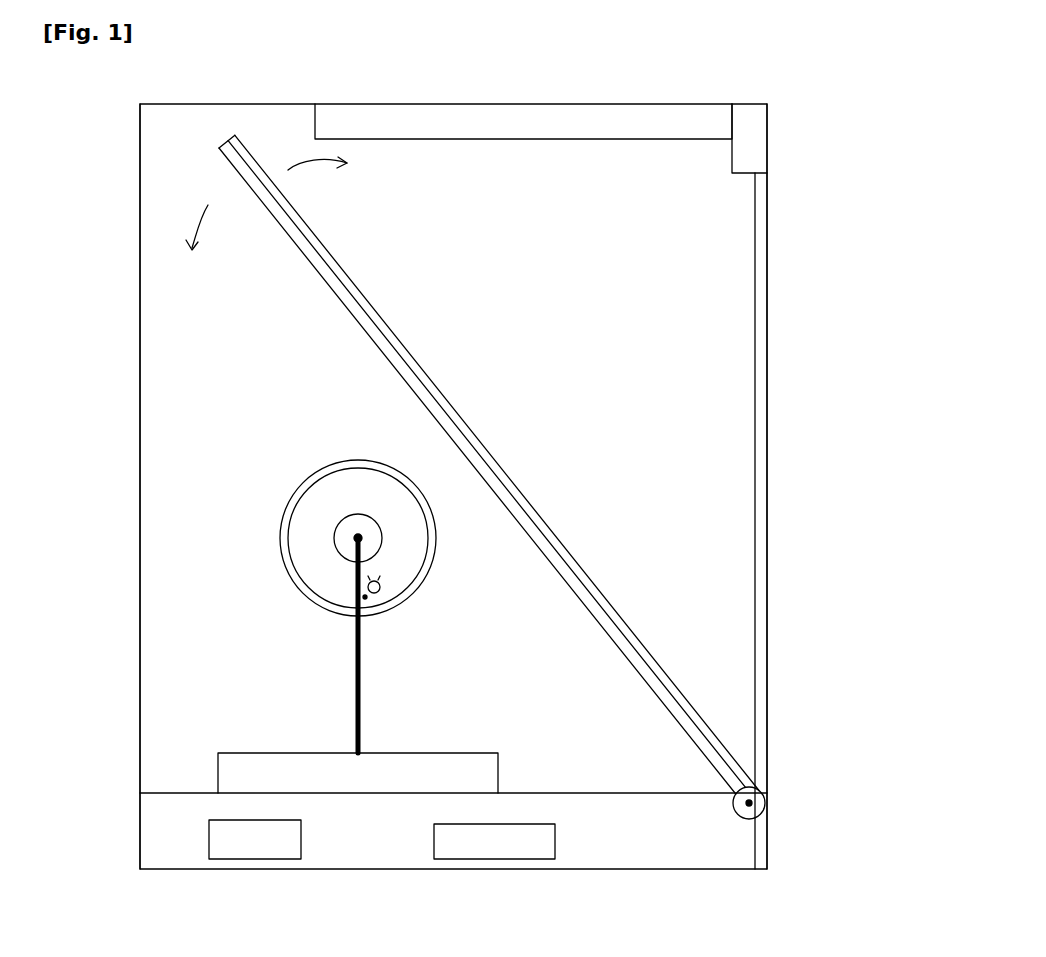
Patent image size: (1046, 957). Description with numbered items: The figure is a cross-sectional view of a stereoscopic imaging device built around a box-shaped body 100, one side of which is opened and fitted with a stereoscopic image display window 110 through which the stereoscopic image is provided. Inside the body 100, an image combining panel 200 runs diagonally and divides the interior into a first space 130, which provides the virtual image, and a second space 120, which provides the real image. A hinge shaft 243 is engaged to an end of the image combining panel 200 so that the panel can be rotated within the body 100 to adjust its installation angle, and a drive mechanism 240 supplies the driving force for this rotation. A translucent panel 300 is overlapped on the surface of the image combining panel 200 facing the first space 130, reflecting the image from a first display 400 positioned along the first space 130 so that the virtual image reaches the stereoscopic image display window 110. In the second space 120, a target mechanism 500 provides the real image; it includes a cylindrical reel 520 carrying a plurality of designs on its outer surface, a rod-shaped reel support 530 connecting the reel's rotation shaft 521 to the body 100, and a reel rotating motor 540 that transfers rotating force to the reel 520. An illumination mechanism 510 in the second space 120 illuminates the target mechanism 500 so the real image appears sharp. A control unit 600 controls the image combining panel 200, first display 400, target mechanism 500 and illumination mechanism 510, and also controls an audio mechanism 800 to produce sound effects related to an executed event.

The body 100 is at (153, 198).
The stereoscopic image display window 110 is at (763, 433).
The second space 120 is at (160, 602).
The first space 130 is at (748, 516).
The image combining panel 200 is at (300, 248).
The drive mechanism 240 is at (765, 800).
The hinge shaft 243 is at (749, 806).
The translucent panel 300 is at (409, 353).
The first display 400 is at (607, 127).
The target mechanism 500 is at (333, 556).
The illumination mechanism 510 is at (383, 582).
The reel 520 is at (290, 532).
The rotation shaft 521 is at (358, 538).
The reel support 530 is at (362, 650).
The reel rotating motor 540 is at (358, 512).
The control unit 600 is at (285, 838).
The audio mechanism 800 is at (545, 838).